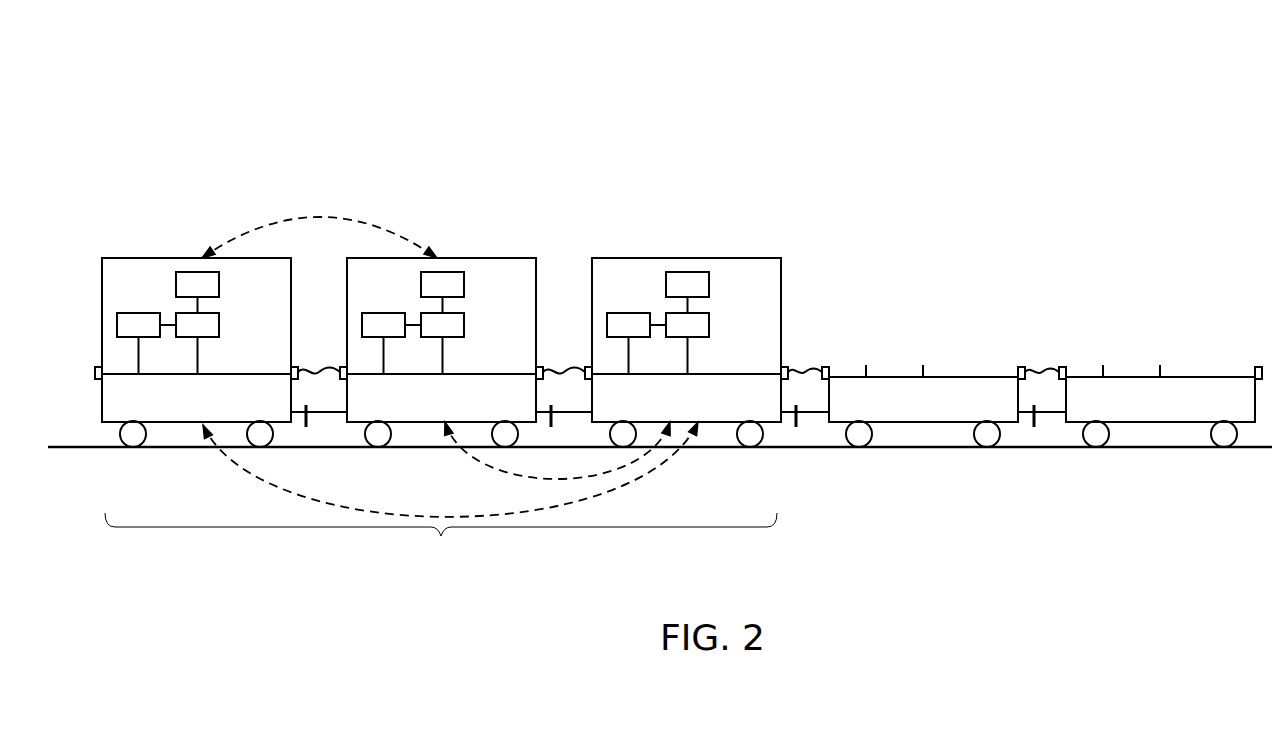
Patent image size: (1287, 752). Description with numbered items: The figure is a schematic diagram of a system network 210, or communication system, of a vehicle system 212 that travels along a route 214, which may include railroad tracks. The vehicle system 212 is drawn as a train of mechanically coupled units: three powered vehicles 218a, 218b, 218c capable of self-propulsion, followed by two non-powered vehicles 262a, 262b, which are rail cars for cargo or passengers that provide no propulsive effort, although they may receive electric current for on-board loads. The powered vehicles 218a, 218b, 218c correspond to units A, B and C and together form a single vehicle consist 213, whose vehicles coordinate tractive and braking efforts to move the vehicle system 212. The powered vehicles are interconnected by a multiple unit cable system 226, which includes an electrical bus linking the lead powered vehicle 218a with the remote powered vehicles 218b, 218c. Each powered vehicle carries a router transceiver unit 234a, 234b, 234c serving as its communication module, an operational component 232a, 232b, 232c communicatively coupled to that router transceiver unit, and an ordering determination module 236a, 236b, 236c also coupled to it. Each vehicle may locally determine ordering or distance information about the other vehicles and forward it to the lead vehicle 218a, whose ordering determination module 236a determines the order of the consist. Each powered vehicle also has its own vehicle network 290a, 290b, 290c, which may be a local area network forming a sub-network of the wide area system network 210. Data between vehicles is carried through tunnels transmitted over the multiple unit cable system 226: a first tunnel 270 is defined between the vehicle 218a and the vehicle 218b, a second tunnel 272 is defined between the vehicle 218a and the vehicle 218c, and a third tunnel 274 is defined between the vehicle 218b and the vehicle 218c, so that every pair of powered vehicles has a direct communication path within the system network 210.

The system network 210 is at (777, 102).
The vehicle system 212 is at (952, 78).
The vehicle consist 213 is at (441, 540).
The route 214 is at (73, 450).
The powered vehicle 218a is at (146, 258).
The powered vehicle 218b is at (481, 258).
The powered vehicle 218c is at (725, 258).
The multiple unit (MU) cable system 226 is at (314, 346).
The operational component 232a is at (117, 325).
The operational component 232b is at (376, 338).
The operational component 232c is at (612, 338).
The router transceiver unit 234a is at (187, 338).
The router transceiver unit 234b is at (456, 338).
The router transceiver unit 234c is at (700, 338).
The ordering determination module 236a is at (176, 284).
The ordering determination module 236b is at (421, 283).
The ordering determination module 236c is at (666, 283).
The non-powered vehicle 262a is at (895, 346).
The non-powered vehicle 262b is at (1135, 348).
The first tunnel 270 is at (241, 228).
The second tunnel 272 is at (243, 473).
The third tunnel 274 is at (470, 460).
The vehicle network 290a is at (256, 272).
The vehicle network 290b is at (500, 272).
The vehicle network 290c is at (745, 272).